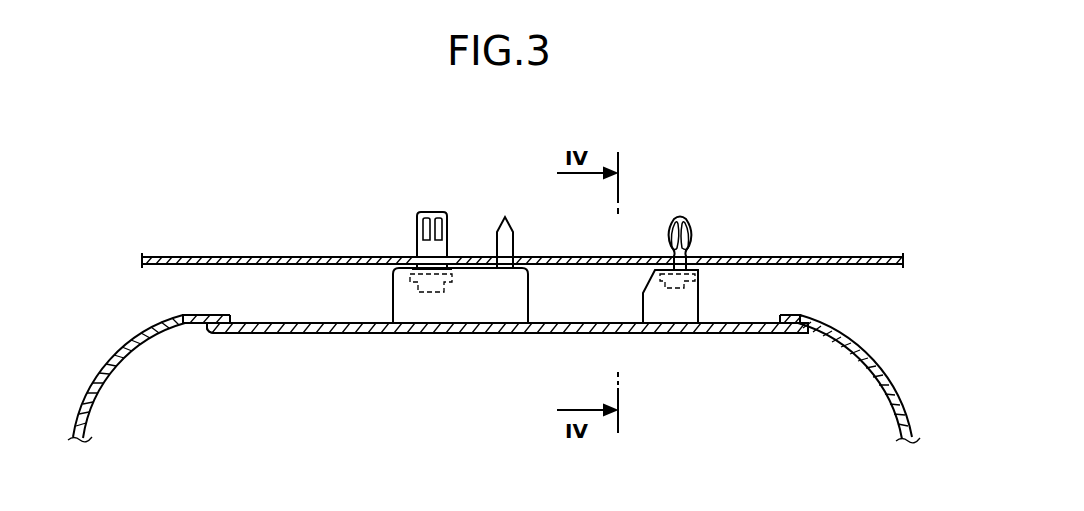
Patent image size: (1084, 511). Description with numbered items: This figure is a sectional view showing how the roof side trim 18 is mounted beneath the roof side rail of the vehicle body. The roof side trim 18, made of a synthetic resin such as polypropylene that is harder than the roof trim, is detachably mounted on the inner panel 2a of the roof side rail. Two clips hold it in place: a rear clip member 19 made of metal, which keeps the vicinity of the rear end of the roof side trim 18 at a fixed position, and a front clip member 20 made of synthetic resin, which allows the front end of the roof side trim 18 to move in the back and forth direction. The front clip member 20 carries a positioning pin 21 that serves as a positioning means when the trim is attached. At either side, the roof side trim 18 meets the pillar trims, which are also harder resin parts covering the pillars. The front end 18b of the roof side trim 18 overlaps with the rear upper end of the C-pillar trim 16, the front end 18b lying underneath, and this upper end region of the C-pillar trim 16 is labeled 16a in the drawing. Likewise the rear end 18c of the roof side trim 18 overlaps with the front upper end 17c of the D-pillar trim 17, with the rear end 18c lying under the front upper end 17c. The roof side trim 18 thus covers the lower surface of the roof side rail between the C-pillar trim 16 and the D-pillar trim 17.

The inner panel 2a is at (298, 256).
The C-pillar trim 16 is at (132, 355).
The end portion of first trim panel 16a is at (206, 317).
The D-pillar trim 17 is at (866, 366).
The front upper end 17c is at (806, 317).
The roof side trim 18 is at (358, 334).
The front end 18b is at (222, 334).
The rear end 18c is at (790, 334).
The rear clip member 19 is at (697, 228).
The front clip member 20 is at (417, 228).
The positioning pin 21 is at (497, 236).